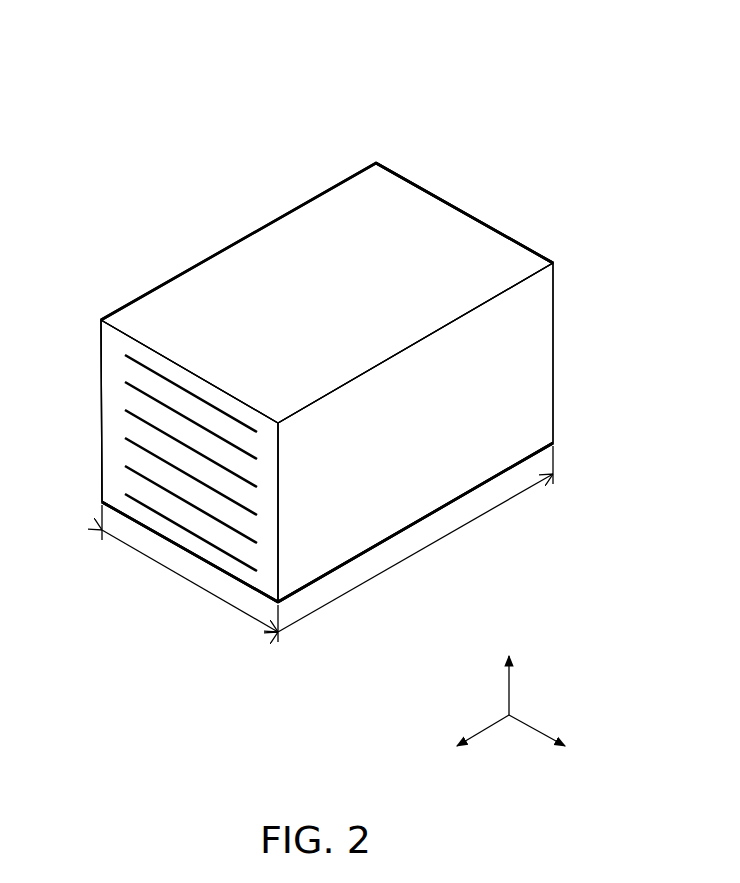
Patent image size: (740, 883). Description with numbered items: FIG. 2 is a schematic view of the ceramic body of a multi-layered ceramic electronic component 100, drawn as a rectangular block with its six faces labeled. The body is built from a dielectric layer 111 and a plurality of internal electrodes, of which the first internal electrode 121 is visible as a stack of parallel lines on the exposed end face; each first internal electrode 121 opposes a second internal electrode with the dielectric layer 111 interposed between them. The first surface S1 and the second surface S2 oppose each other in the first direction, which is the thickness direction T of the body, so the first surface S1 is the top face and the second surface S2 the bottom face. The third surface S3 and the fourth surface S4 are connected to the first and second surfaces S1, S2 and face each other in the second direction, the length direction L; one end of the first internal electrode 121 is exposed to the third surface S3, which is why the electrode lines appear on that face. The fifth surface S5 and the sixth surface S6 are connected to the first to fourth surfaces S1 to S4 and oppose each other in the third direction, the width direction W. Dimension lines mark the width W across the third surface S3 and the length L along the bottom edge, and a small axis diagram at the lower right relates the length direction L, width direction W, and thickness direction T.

The multi-layered ceramic electronic component 100 is at (128, 59).
The dielectric layer 111 is at (127, 403).
The first internal electrode 121 is at (127, 356).
The first surface S1 is at (327, 224).
The second surface S2 is at (336, 548).
The third surface S3 is at (185, 522).
The fourth surface S4 is at (447, 238).
The fifth surface S5 is at (529, 370).
The sixth surface S6 is at (175, 311).
The width direction W is at (347, 635).
The length direction L is at (415, 606).
The thickness direction T is at (509, 672).